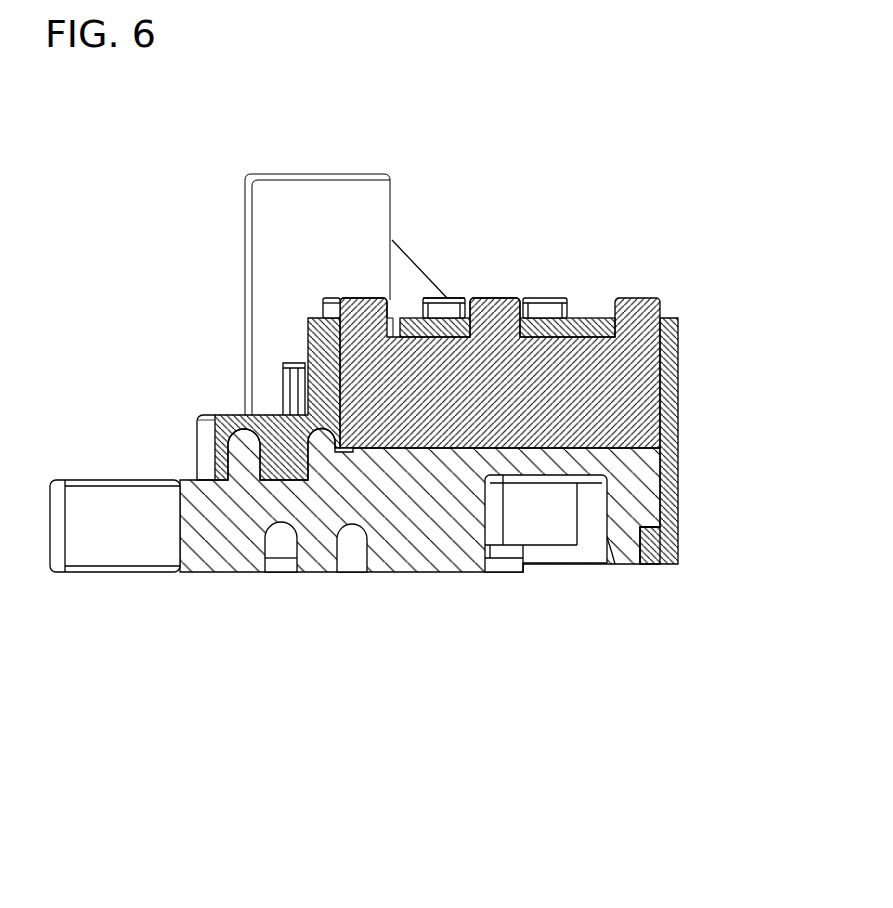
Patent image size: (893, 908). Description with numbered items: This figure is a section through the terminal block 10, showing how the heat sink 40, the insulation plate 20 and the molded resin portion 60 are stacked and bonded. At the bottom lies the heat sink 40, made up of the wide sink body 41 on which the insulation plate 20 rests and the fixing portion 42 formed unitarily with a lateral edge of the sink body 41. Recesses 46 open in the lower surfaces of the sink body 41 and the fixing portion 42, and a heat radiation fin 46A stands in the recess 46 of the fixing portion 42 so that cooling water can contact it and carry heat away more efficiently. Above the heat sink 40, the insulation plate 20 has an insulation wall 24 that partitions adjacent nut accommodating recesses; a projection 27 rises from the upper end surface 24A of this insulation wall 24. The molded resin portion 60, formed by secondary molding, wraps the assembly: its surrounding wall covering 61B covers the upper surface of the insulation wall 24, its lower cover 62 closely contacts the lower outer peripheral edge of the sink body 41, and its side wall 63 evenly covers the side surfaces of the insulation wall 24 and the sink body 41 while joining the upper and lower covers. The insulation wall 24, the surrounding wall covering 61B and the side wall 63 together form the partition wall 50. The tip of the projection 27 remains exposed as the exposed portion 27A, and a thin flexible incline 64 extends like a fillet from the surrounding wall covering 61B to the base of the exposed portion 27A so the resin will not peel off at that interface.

The terminal block 10 is at (408, 461).
The insulation plate 20 is at (355, 550).
The insulation wall 24 is at (647, 363).
The upper end surface of the insulation wall 24A is at (402, 317).
The projection 27 is at (362, 318).
The exposed portion 27A is at (447, 298).
The heat sink 40 is at (138, 574).
The sink body 41 is at (470, 574).
The fixing portion 42 is at (122, 552).
The recess 46 is at (365, 573).
The heat radiation fin 46A is at (307, 573).
The partition wall 50 is at (479, 305).
The molded resin portion 60 is at (480, 426).
The surrounding wall covering 61B is at (588, 327).
The lower cover 62 is at (661, 566).
The side wall 63 is at (680, 380).
The incline 64 is at (323, 307).